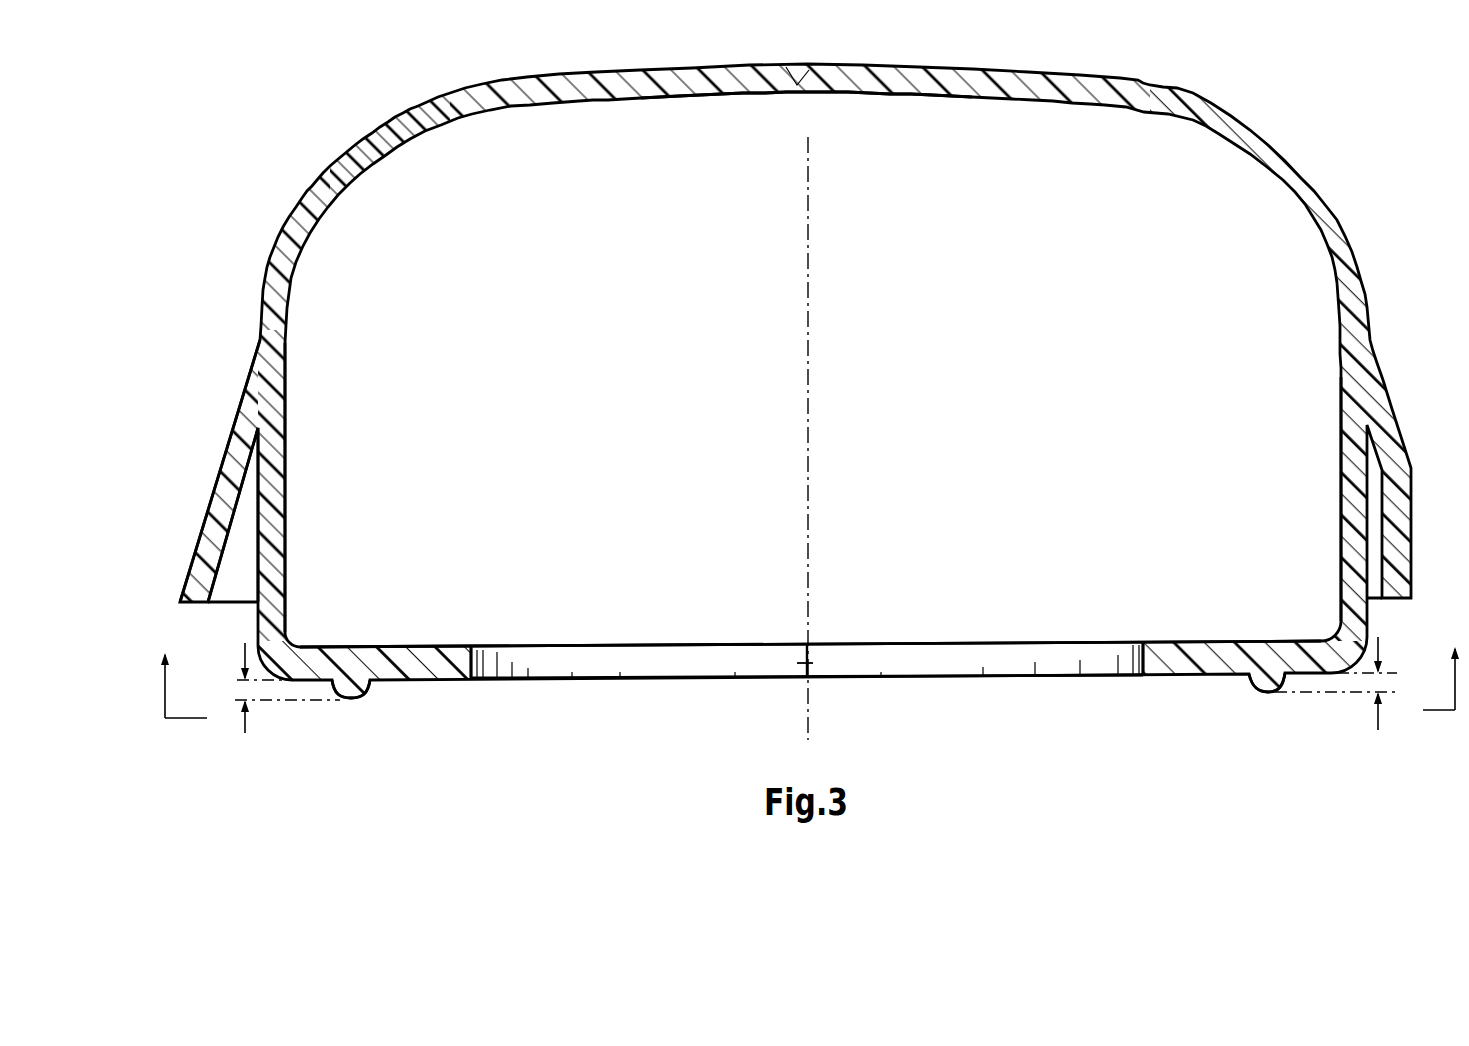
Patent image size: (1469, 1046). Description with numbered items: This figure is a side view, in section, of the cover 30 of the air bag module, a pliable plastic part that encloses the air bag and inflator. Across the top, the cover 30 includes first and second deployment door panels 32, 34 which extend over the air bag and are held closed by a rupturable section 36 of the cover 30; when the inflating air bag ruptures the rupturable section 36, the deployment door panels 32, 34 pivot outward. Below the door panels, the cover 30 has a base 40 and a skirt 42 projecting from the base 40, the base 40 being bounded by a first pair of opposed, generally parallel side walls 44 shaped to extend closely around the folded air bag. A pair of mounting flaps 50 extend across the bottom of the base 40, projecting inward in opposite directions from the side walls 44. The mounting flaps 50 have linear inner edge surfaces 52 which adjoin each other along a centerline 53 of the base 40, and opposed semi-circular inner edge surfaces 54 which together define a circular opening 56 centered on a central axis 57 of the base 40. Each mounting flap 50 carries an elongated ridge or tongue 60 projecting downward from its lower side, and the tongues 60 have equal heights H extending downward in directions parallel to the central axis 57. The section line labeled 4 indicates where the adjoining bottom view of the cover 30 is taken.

The cover 30 is at (330, 154).
The first deployment door panel 32 is at (718, 77).
The second deployment door panel 34 is at (860, 78).
The rupturable section 36 is at (796, 83).
The base 40 is at (257, 485).
The skirt 42 is at (200, 532).
The first pair of opposed side walls 44 is at (280, 458).
The mounting flaps 50 is at (442, 682).
The linear inner edge surfaces 52 is at (806, 676).
The centerline 53 is at (813, 665).
The semi-circular inner edge surfaces 54 is at (573, 661).
The circular opening 56 is at (696, 670).
The central axis 57 is at (808, 448).
The tongue 60 is at (351, 698).
The section line 4 is at (811, 671).
The height H is at (816, 697).